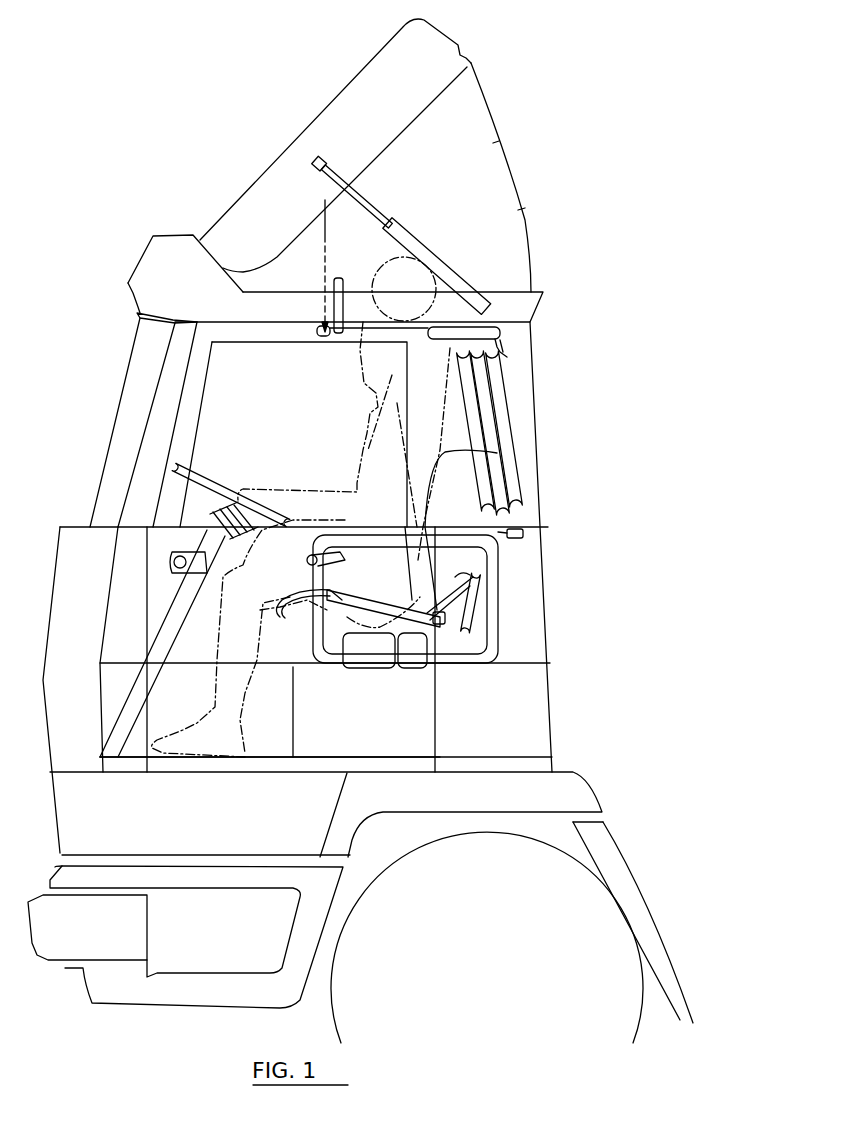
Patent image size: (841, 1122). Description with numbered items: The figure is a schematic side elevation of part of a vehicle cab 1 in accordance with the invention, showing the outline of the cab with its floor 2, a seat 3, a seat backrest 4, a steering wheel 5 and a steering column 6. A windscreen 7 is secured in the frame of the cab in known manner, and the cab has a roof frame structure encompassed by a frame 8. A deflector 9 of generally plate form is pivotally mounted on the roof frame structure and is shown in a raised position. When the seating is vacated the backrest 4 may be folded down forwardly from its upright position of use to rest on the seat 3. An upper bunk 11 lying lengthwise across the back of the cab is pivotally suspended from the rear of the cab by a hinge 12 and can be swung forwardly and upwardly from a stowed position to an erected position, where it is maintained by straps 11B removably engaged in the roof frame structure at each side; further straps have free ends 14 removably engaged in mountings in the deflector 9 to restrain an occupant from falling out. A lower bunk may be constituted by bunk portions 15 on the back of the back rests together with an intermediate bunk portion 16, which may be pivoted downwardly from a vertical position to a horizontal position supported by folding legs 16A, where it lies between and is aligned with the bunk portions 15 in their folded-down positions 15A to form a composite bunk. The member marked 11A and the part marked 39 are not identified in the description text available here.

The vehicle cab 1 is at (98, 461).
The floor 2 is at (157, 760).
The seat 3 is at (290, 610).
The seat backrest 4 is at (466, 445).
The steering wheel 5 is at (210, 483).
The steering column 6 is at (177, 612).
The windscreen 7 is at (120, 432).
The frame 8 is at (172, 243).
The deflector 9 is at (250, 197).
The upper bunk 11 is at (442, 333).
The guide rail arm 11A is at (507, 458).
The straps 11B is at (333, 310).
The hinge 12 is at (510, 348).
The free ends 14 is at (325, 200).
The bunk portions 15 is at (468, 580).
The bunk portion positions 15A is at (387, 538).
The intermediate bunk portion 16 is at (517, 467).
The folding legs 16A is at (473, 407).
The hydraulic cylinder 39 is at (428, 258).